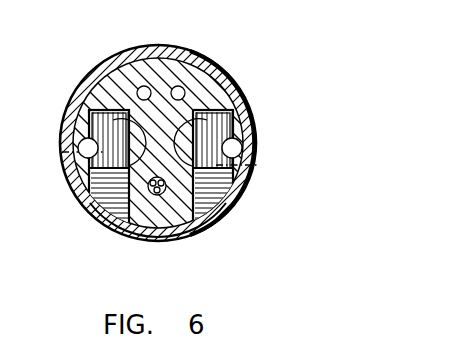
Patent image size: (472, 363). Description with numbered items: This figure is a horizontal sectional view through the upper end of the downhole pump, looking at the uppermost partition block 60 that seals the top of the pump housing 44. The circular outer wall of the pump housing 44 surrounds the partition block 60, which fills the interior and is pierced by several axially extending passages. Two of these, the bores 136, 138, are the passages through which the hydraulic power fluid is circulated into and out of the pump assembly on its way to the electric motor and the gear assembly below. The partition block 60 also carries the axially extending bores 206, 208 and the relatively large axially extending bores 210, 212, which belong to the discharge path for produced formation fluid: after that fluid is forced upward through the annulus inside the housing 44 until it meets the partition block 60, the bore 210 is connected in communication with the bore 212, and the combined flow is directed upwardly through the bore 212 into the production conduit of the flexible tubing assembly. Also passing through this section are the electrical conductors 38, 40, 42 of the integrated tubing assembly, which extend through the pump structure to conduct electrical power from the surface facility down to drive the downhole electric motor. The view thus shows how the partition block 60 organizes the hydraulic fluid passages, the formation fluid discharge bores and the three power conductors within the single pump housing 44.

The electrical conductor 38 is at (151, 241).
The electrical conductor 40 is at (183, 232).
The electrical conductor 42 is at (158, 177).
The pump housing 44 is at (66, 105).
The partition block 60 is at (238, 86).
The axially extending bore 136 is at (152, 66).
The axially extending bore 138 is at (203, 92).
The axially extending bore 206 is at (77, 150).
The axially extending bore 208 is at (246, 131).
The axially extending bore 210 is at (67, 172).
The axially extending bore 212 is at (250, 166).